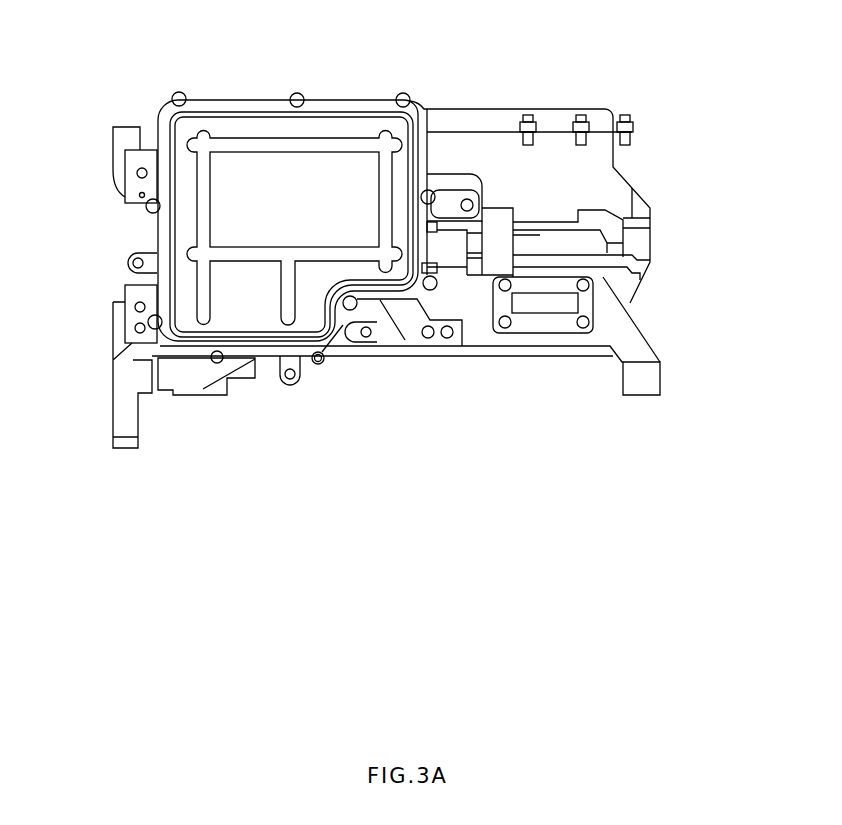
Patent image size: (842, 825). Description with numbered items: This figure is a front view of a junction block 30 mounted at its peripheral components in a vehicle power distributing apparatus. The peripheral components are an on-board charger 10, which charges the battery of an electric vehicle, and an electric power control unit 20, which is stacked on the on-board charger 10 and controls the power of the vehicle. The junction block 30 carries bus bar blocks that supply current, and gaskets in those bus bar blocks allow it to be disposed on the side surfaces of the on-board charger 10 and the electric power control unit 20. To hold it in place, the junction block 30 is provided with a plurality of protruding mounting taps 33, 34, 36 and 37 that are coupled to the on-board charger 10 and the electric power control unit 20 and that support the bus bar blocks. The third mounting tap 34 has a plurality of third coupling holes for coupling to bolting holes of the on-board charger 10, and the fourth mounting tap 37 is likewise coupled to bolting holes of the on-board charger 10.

The on-board charger 10 is at (662, 306).
The electric power control unit 20 is at (661, 165).
The junction block 30 is at (277, 72).
The mounting tap 33 is at (140, 293).
The third mounting tap 34 is at (407, 318).
The mounting tap 36 is at (143, 162).
The fourth mounting tap 37 is at (453, 200).